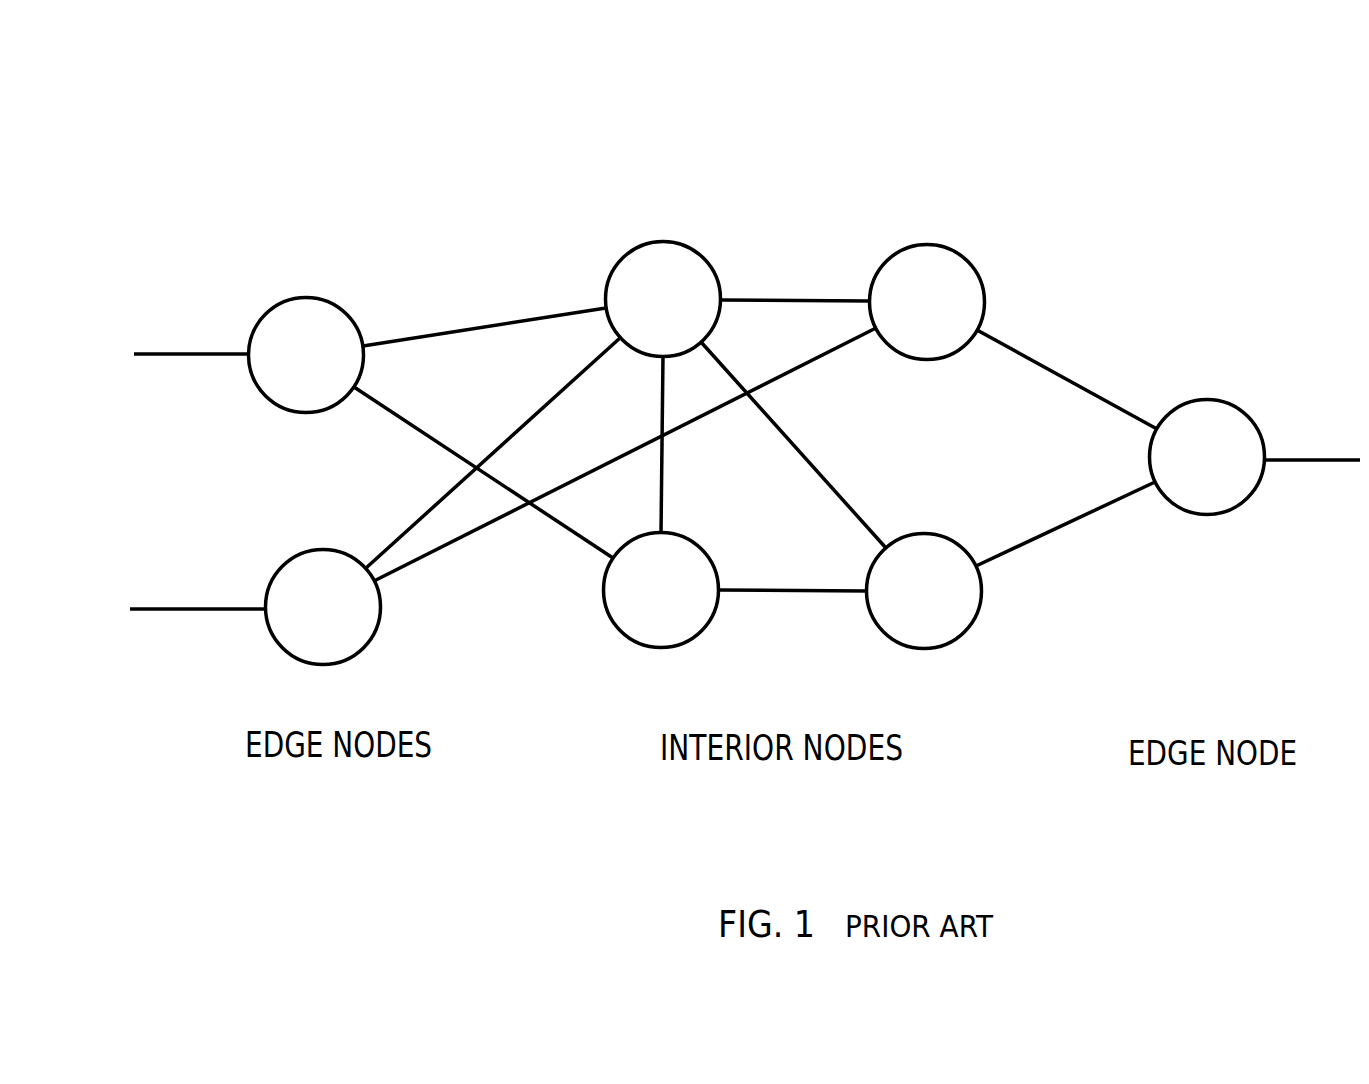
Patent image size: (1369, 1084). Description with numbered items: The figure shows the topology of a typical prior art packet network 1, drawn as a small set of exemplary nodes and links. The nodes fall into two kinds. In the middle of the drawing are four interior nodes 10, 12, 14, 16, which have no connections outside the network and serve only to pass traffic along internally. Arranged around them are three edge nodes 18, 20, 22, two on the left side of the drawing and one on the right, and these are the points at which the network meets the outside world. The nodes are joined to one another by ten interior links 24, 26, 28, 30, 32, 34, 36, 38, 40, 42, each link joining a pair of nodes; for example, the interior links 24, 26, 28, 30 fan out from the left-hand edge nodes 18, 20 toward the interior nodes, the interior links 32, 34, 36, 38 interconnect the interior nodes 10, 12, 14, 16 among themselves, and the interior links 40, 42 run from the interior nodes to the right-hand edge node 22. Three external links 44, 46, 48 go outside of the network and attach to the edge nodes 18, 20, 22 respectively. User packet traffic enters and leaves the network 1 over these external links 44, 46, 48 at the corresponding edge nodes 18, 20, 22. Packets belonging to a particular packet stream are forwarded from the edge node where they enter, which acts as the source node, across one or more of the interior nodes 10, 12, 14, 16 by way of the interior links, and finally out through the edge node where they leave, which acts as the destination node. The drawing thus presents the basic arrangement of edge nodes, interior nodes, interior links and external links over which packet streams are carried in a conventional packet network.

The packet network 1 is at (978, 110).
The interior node 10 is at (663, 299).
The interior node 12 is at (927, 302).
The interior node 14 is at (661, 590).
The interior node 16 is at (924, 591).
The edge node 18 is at (306, 355).
The edge node 20 is at (323, 607).
The edge node 22 is at (1207, 457).
The interior link 24 is at (482, 327).
The interior link 26 is at (423, 429).
The interior link 28 is at (567, 388).
The interior link 30 is at (812, 362).
The interior link 32 is at (774, 300).
The interior link 34 is at (861, 521).
The interior link 36 is at (663, 473).
The interior link 38 is at (772, 590).
The interior link 40 is at (1062, 368).
The interior link 42 is at (1077, 519).
The external link 44 is at (213, 354).
The external link 46 is at (210, 609).
The external link 48 is at (1300, 460).